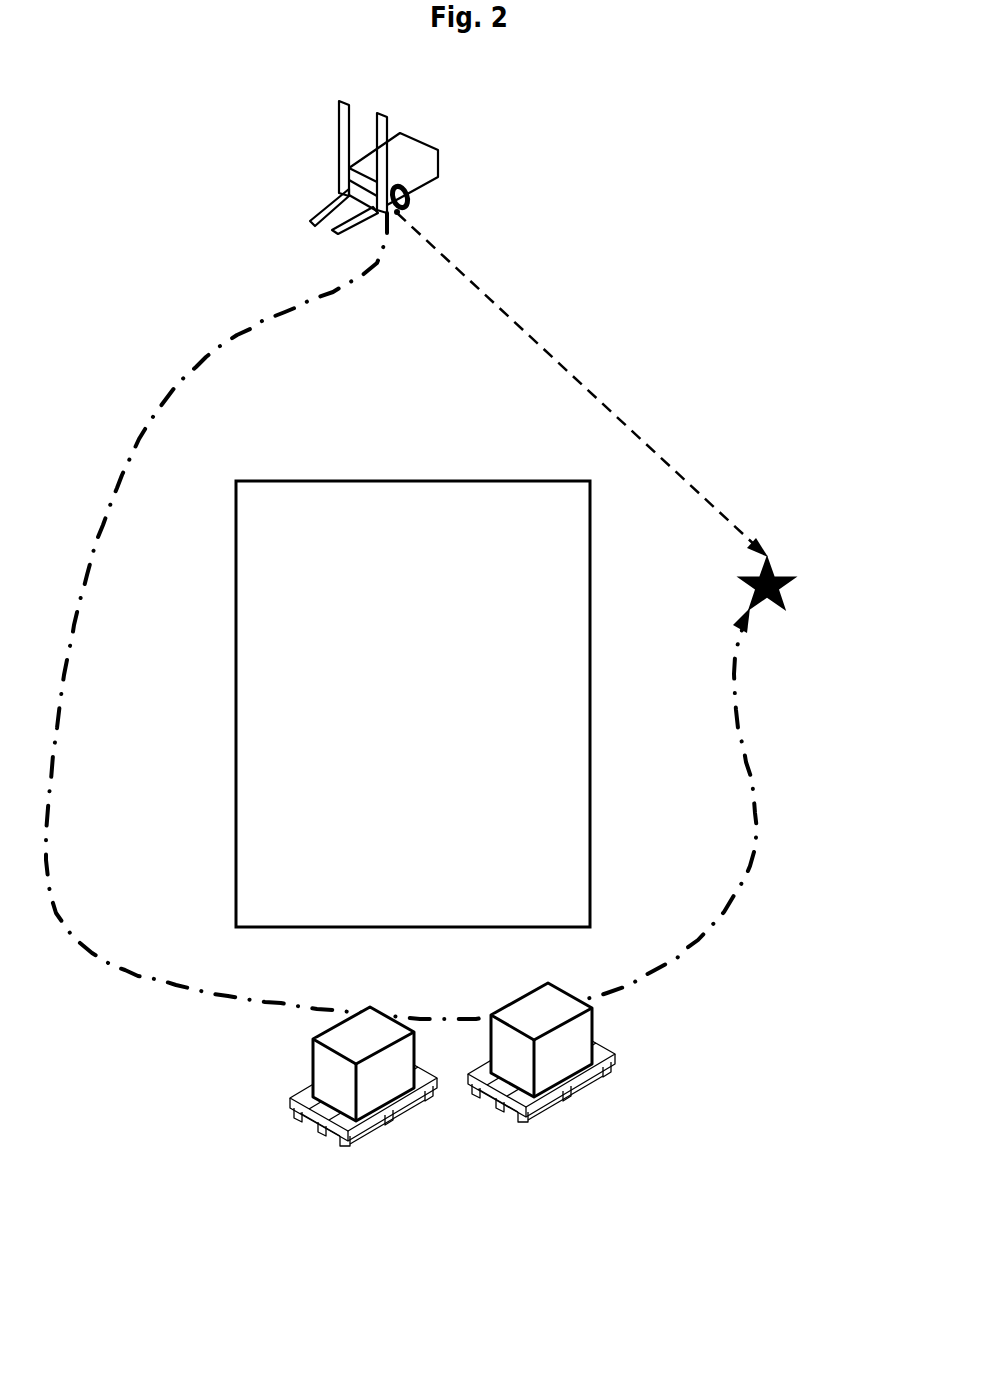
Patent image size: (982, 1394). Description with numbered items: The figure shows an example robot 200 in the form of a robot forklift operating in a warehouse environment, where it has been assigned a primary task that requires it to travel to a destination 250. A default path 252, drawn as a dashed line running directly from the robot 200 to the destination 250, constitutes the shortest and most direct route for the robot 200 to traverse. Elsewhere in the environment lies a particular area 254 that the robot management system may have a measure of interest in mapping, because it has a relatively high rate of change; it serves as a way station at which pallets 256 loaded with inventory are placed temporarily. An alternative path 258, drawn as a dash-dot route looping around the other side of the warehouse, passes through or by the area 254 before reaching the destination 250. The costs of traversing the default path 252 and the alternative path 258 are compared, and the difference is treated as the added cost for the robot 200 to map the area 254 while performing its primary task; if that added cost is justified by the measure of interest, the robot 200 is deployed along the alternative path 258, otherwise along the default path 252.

The robot 200 is at (416, 133).
The destination 250 is at (782, 598).
The default path 252 is at (564, 372).
The area 254 is at (317, 1183).
The pallets 256 is at (431, 1204).
The alternative path 258 is at (150, 421).